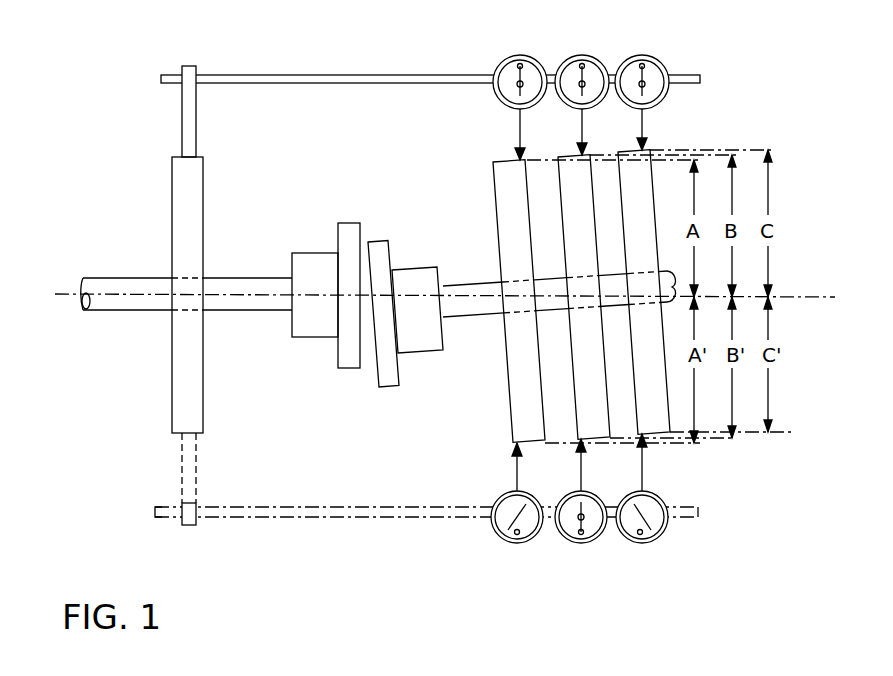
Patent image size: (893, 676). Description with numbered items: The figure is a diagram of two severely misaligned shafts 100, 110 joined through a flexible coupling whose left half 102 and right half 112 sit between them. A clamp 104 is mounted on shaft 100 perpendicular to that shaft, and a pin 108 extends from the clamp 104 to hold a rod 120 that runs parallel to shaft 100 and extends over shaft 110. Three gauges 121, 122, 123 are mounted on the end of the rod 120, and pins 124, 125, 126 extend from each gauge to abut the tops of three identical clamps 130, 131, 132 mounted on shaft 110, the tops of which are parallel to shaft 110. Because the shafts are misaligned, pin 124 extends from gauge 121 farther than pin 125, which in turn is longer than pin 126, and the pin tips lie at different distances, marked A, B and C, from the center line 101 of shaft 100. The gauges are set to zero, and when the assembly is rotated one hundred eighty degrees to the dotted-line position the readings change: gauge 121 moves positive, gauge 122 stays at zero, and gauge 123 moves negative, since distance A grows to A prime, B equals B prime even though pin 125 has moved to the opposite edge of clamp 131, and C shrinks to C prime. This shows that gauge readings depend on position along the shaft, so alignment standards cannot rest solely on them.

The shaft 100 is at (260, 310).
The center line 101 is at (65, 294).
The left half of flexible coupling 102 is at (312, 336).
The clamp 104 is at (195, 203).
The pin 108 is at (193, 130).
The shaft 110 is at (467, 312).
The right half of flexible coupling 112 is at (422, 346).
The rod 120 is at (323, 75).
The gauge 121 is at (497, 67).
The gauge 122 is at (561, 65).
The gauge 123 is at (632, 62).
The pin 124 is at (517, 132).
The pin 125 is at (580, 130).
The pin 126 is at (640, 130).
The clamp 130 is at (497, 203).
The clamp 131 is at (562, 203).
The clamp 132 is at (623, 203).